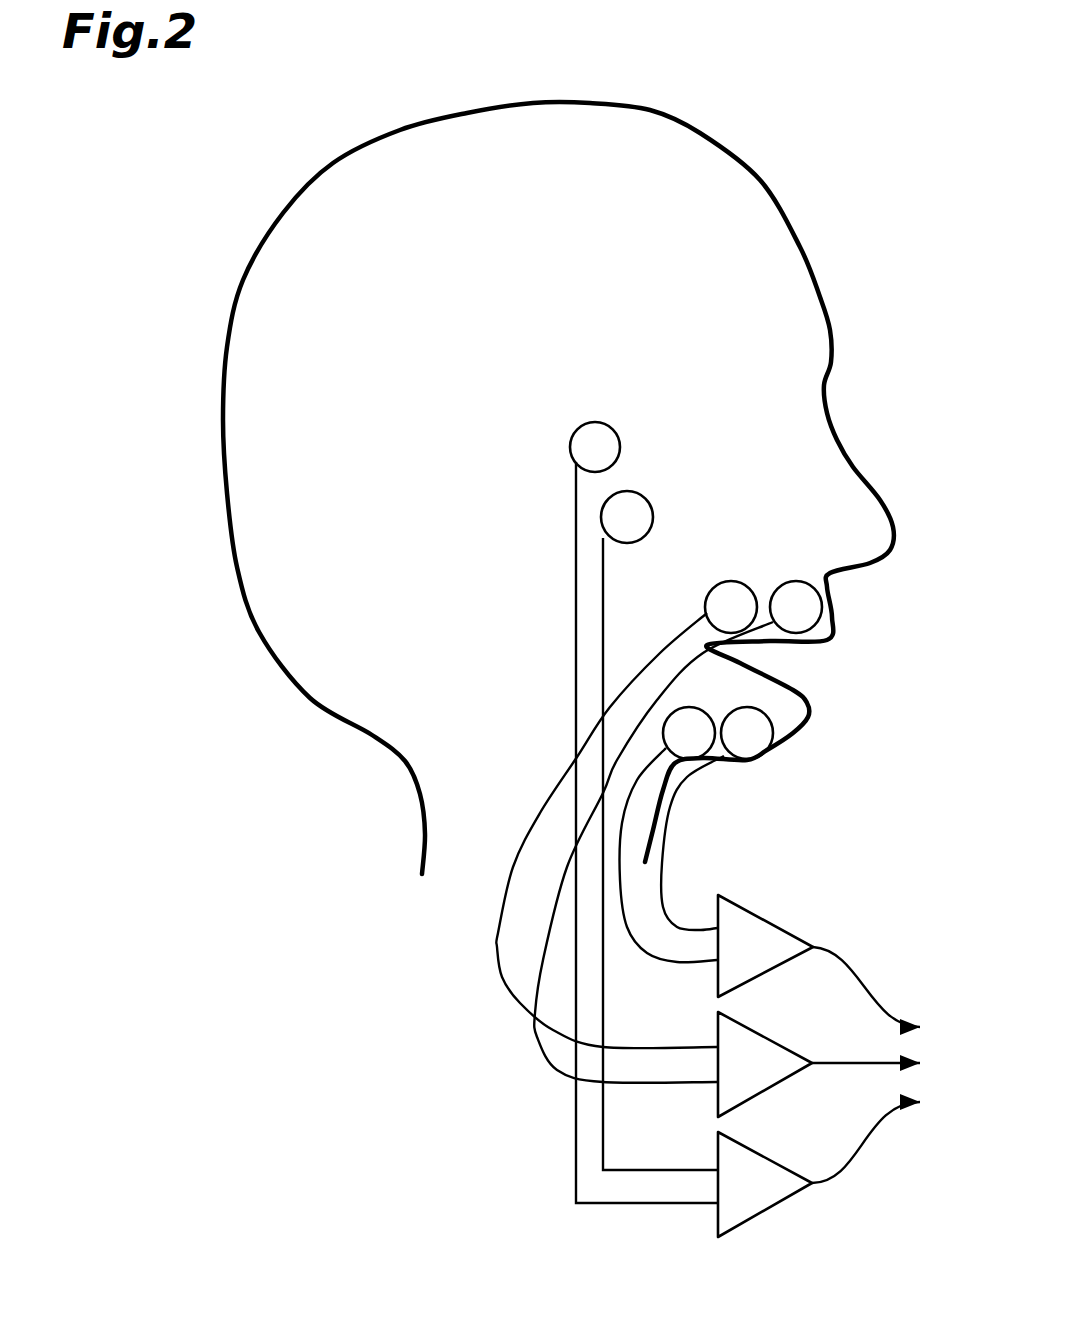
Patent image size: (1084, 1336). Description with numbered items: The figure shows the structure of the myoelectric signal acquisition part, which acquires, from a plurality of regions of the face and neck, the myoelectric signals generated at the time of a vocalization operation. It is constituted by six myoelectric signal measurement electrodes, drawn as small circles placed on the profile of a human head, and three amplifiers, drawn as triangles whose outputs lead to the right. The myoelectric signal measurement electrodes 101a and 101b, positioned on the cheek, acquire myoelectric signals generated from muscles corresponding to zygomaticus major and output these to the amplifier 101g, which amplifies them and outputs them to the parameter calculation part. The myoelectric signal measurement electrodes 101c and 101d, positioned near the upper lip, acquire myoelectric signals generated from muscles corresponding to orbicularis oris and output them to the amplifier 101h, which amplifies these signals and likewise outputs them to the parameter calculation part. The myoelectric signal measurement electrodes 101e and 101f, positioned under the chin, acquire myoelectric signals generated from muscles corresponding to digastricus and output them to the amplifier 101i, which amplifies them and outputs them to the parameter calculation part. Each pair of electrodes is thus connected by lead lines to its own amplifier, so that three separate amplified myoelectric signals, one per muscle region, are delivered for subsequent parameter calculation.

The myoelectric signal measurement electrode 101a is at (612, 425).
The myoelectric signal measurement electrode 101b is at (652, 502).
The myoelectric signal measurement electrode 101c is at (744, 582).
The myoelectric signal measurement electrode 101d is at (782, 582).
The myoelectric signal measurement electrode 101e is at (760, 714).
The myoelectric signal measurement electrode 101f is at (714, 746).
The amplifier 101g is at (758, 932).
The amplifier 101h is at (776, 1068).
The amplifier 101i is at (762, 1202).